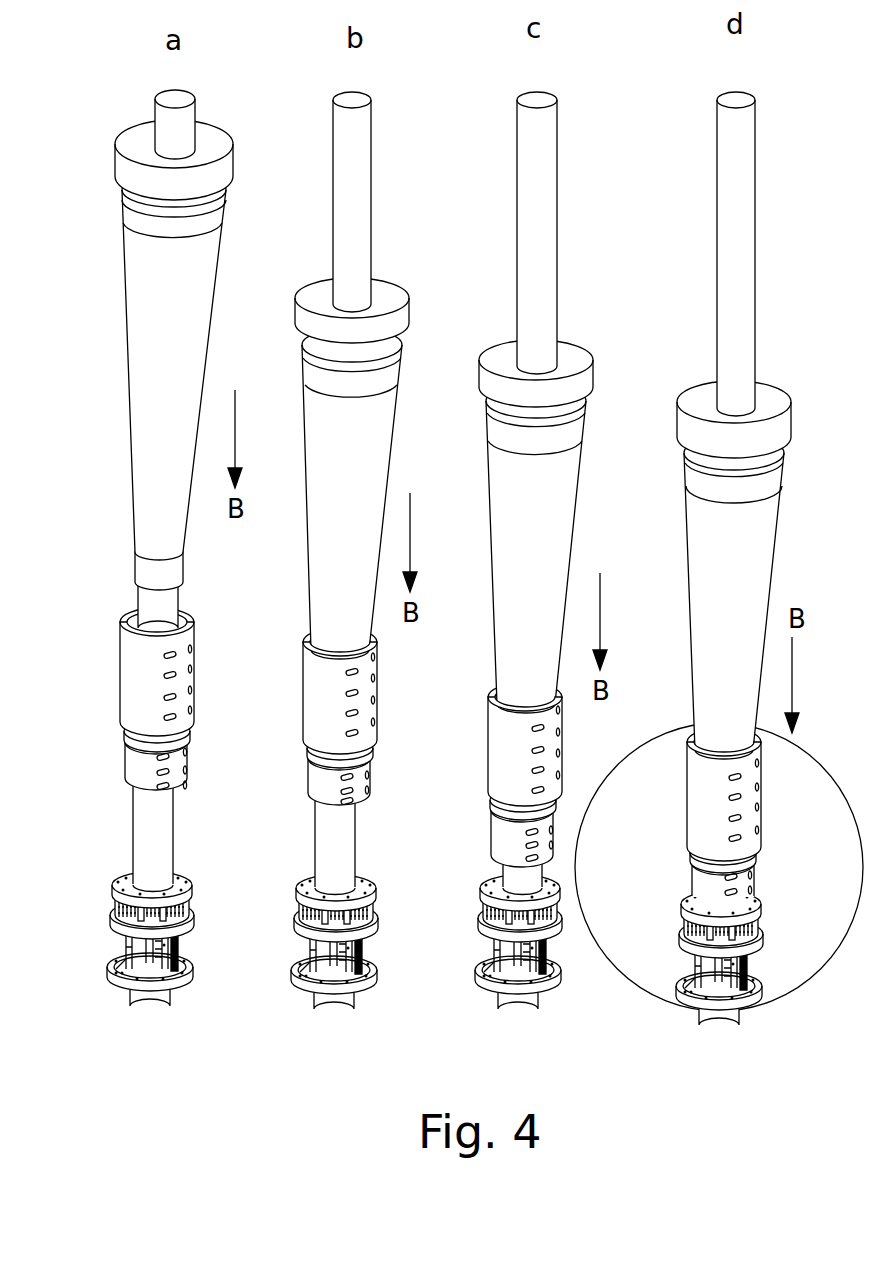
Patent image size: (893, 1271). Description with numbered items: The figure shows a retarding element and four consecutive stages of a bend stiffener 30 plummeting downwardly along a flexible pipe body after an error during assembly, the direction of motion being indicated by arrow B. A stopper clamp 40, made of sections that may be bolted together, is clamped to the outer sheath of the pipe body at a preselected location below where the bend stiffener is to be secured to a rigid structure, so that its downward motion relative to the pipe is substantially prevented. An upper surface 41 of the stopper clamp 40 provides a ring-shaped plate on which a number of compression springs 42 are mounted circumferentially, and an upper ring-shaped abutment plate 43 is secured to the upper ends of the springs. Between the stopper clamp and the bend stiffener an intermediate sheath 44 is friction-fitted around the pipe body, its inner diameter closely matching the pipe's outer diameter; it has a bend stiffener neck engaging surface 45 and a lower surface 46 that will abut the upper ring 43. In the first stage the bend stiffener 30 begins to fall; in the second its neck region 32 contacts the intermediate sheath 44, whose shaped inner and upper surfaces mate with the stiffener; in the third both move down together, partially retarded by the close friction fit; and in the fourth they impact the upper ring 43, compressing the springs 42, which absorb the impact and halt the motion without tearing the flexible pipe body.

The bend stiffener 30 is at (192, 296).
The neck region 32 is at (146, 572).
The stopper clamp 40 is at (192, 952).
The upper surface 41 is at (190, 905).
The compression springs 42 is at (110, 902).
The upper ring-shaped abutment plate 43 is at (186, 872).
The intermediate sheath 44 is at (194, 678).
The bend stiffener neck engaging surface 45 is at (192, 608).
The lower surface 46 is at (183, 798).